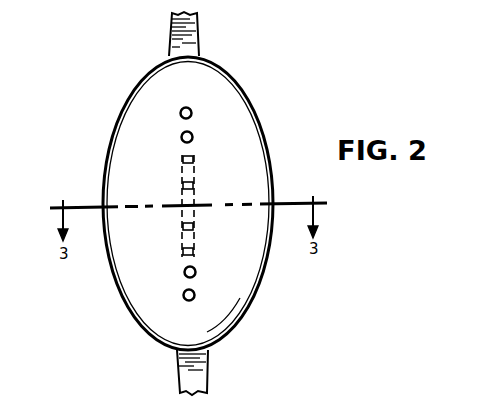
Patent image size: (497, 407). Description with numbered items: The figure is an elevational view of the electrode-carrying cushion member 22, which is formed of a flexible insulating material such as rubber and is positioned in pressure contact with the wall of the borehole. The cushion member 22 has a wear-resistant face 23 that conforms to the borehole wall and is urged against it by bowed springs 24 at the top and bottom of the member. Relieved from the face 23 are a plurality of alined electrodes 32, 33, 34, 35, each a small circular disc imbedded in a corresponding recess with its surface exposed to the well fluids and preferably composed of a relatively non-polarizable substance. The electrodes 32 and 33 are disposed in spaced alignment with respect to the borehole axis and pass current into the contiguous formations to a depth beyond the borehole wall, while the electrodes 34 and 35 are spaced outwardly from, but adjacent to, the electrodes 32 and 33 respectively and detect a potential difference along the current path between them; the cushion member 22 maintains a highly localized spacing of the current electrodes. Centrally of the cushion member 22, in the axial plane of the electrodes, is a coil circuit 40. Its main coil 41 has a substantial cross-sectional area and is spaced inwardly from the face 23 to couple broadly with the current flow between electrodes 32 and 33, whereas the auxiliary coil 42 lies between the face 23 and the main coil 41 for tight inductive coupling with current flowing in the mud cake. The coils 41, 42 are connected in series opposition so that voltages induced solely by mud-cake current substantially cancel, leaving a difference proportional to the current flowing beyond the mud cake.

The cushion member 22 is at (117, 148).
The wear-resistant face 23 is at (140, 293).
The bowed springs 24 is at (199, 22).
The electrode 32 is at (193, 135).
The electrode 33 is at (196, 269).
The electrode 34 is at (192, 110).
The electrode 35 is at (195, 292).
The coil circuit 40 is at (196, 218).
The main coil 41 is at (194, 159).
The auxiliary coil 42 is at (194, 184).